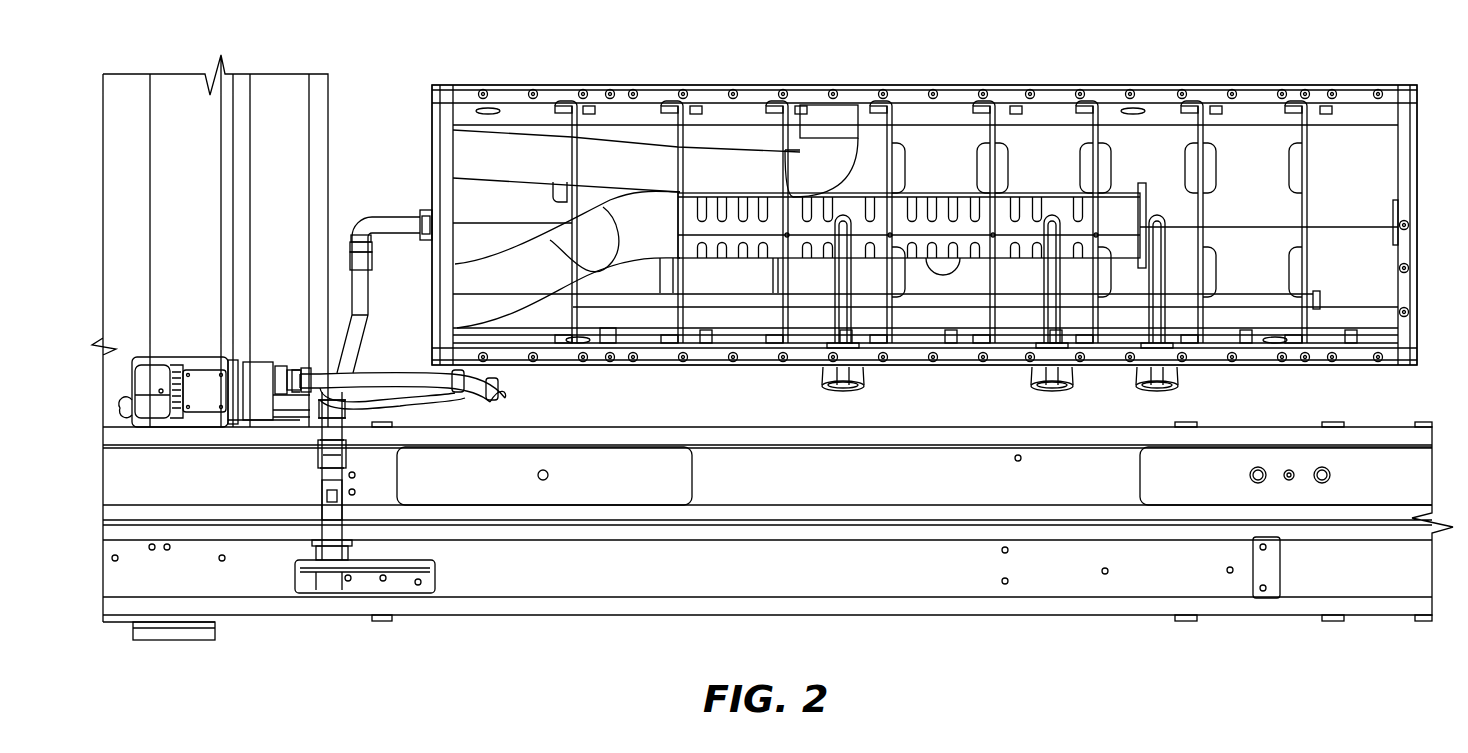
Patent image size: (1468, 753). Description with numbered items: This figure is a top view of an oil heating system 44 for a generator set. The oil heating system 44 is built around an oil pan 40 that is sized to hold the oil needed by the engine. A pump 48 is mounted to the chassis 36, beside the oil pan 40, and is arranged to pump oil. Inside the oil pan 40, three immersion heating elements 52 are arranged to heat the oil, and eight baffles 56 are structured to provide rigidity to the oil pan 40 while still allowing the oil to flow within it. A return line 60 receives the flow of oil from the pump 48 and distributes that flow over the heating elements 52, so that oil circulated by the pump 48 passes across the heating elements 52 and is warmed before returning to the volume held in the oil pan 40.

The chassis 36 is at (597, 587).
The oil pan 40 is at (812, 85).
The oil heating system 44 is at (605, 45).
The pump 48 is at (197, 430).
The immersion heating elements 52 is at (843, 393).
The baffles 56 is at (1083, 153).
The return line 60 is at (653, 300).